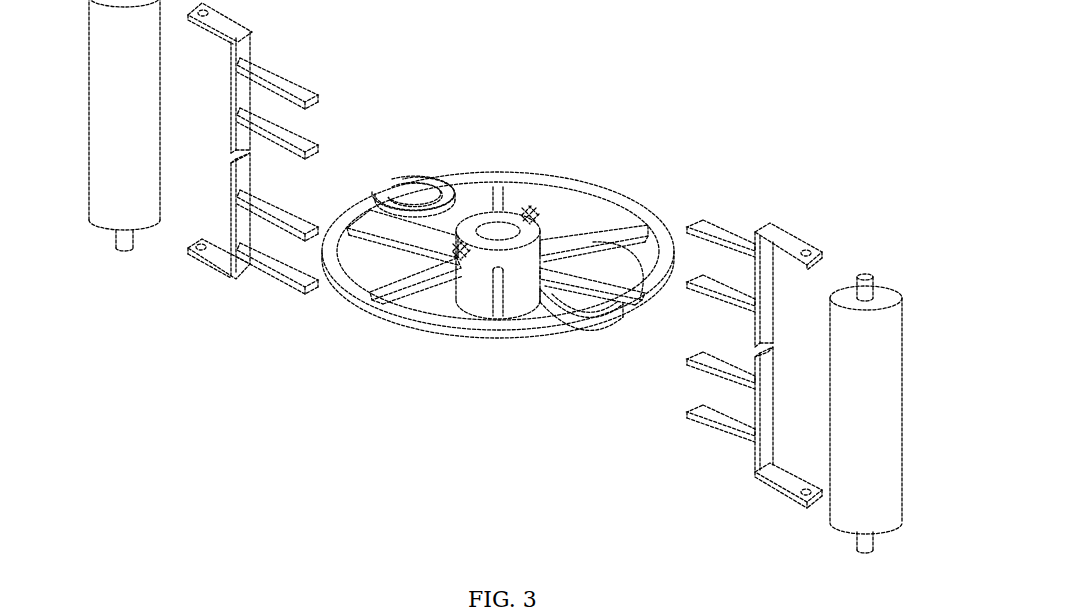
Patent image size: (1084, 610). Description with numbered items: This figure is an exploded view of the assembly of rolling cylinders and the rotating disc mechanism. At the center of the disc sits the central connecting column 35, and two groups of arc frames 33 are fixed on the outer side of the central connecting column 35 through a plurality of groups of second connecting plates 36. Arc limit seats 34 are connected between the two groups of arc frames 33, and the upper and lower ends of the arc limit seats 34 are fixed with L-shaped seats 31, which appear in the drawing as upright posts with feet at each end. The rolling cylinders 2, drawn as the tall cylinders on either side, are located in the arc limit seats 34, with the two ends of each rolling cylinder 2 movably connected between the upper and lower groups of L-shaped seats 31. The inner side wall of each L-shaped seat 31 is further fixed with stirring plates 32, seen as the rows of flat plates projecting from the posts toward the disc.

The rolling cylinder 2 is at (112, 107).
The L-shaped seat 31 is at (215, 264).
The stirring plate 32 is at (305, 91).
The arc frame 33 is at (410, 320).
The arc limit seat 34 is at (399, 193).
The central connecting column 35 is at (513, 304).
The second connecting plate 36 is at (650, 292).